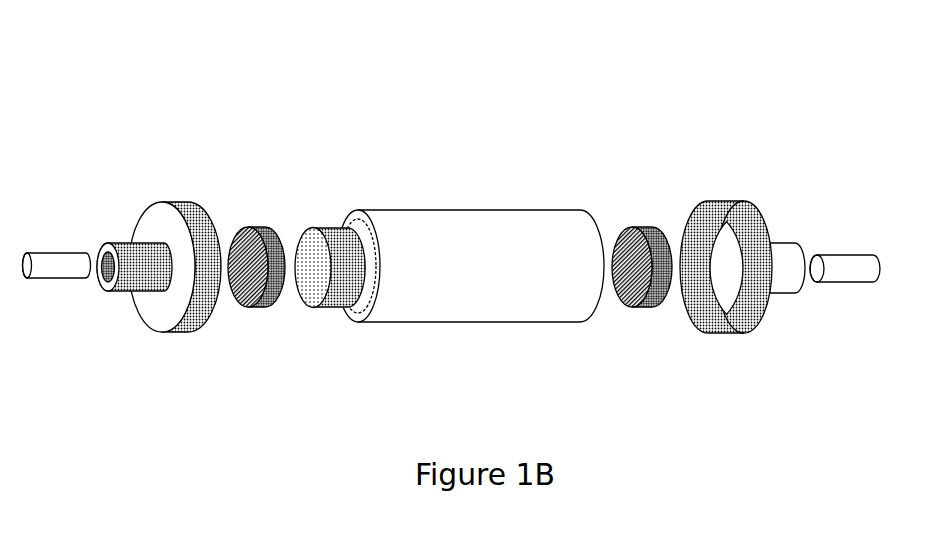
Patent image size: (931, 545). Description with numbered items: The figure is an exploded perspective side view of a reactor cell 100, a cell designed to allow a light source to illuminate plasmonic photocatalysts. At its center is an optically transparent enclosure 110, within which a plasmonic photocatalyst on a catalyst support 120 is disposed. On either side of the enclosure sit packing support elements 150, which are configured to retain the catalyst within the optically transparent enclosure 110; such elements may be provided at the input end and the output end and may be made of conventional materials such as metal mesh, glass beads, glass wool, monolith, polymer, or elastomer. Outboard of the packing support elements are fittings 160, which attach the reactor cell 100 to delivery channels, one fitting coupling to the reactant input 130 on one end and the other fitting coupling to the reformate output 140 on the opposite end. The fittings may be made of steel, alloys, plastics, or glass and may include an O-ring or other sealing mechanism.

The reactor cell 100 is at (168, 93).
The optically transparent enclosure 110 is at (473, 263).
The catalyst support 120 is at (313, 263).
The reactant input 130 is at (51, 263).
The reformate output 140 is at (850, 263).
The packing support elements 150 is at (248, 263).
The fittings 160 is at (130, 263).